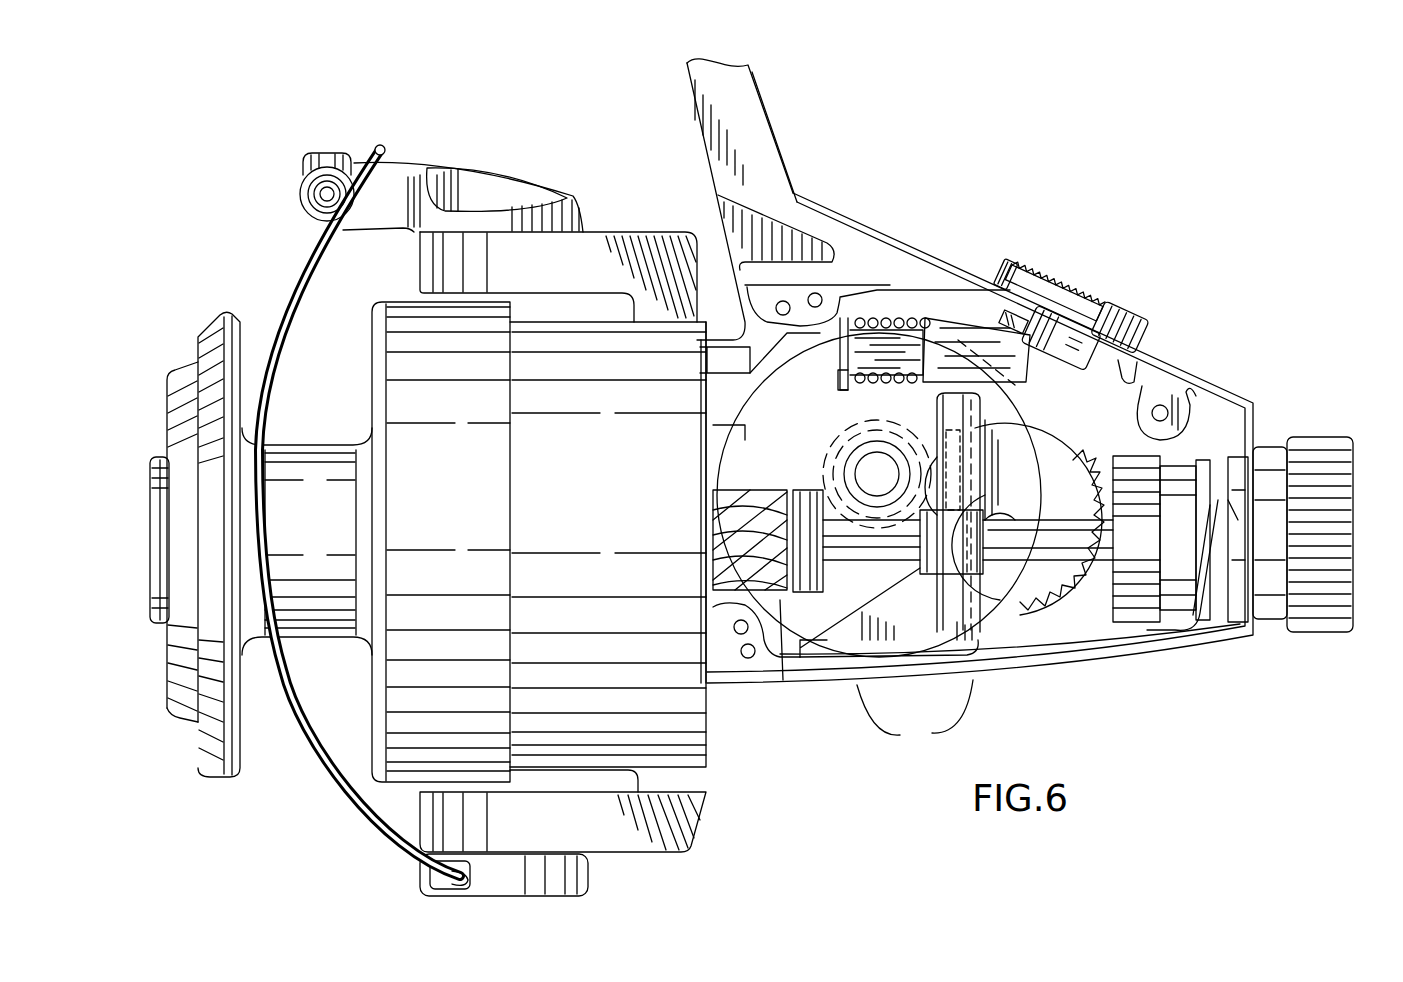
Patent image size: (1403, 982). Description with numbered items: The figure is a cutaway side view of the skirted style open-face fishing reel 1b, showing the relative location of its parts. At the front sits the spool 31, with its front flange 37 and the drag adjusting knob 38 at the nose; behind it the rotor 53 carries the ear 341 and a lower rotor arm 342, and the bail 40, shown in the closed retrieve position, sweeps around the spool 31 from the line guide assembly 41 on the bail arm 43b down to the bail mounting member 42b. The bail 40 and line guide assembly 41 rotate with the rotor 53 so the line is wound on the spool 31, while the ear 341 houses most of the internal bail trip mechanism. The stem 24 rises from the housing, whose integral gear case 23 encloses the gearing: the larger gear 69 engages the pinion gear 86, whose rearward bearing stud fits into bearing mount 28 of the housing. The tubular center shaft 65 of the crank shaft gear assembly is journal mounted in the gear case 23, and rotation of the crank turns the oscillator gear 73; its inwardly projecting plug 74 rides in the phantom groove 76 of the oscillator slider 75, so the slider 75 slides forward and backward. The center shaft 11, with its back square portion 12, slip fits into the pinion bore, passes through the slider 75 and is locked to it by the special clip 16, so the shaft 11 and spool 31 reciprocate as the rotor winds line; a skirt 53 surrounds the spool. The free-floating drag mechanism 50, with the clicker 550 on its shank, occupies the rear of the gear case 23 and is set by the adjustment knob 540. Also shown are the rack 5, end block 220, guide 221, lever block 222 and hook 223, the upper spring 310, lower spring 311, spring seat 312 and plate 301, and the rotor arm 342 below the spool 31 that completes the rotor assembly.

The drag adjusting knob 38 is at (152, 490).
The spool front flange 37 is at (170, 665).
The spool 31 is at (410, 680).
The rotor 53 is at (680, 730).
The ear 341 is at (637, 248).
The lower rotor arm 342 is at (680, 815).
The bail arm 42b is at (585, 880).
The bail 40 is at (340, 805).
The line guide assembly 41 is at (300, 196).
The bail arm 43b is at (515, 170).
The stem 24 is at (752, 117).
The gear case 23 is at (1200, 380).
The bearing mount 28 is at (783, 680).
The skirted style open-face fishing reel 1b is at (950, 192).
The larger gear 69 is at (1023, 417).
The tubular center shaft 65 is at (858, 475).
The pinion gear 86 is at (753, 498).
The center shaft 11 is at (865, 548).
The special clip 16 is at (915, 572).
The oscillator slider 75 is at (940, 411).
The groove 76 is at (1008, 469).
The plug 74 is at (1025, 492).
The oscillator gear 73 is at (1090, 455).
The back square portion 12 is at (1070, 540).
The drag mechanism 50 is at (1190, 620).
The clicker 550 is at (1150, 625).
The adjustment knob 540 is at (1335, 442).
The rack 5 is at (1088, 312).
The rack end block 220 is at (1150, 330).
The rack guide 221 is at (1080, 312).
The lever block 222 is at (1036, 320).
The hook 223 is at (1140, 362).
The upper spring 310 is at (890, 315).
The lower spring 311 is at (840, 388).
The spring seat 312 is at (855, 422).
The plate 301 is at (962, 340).